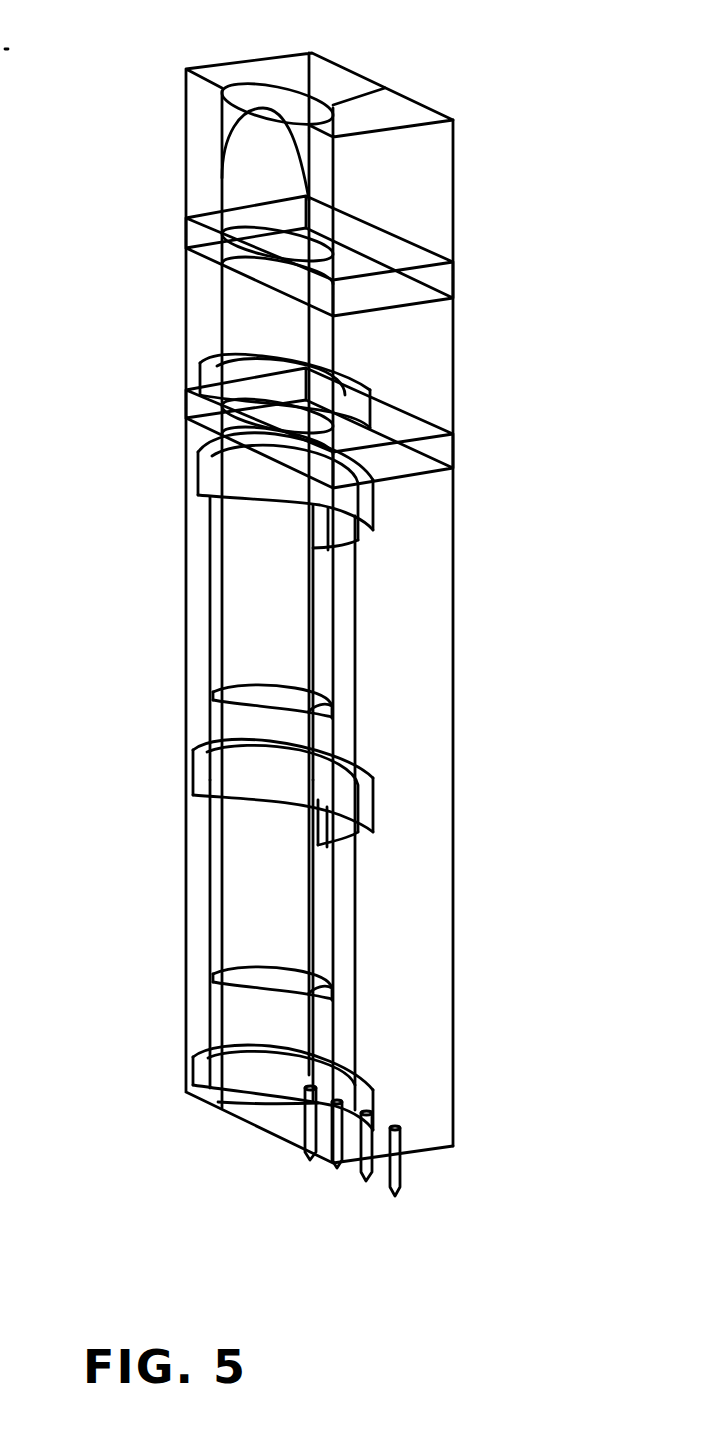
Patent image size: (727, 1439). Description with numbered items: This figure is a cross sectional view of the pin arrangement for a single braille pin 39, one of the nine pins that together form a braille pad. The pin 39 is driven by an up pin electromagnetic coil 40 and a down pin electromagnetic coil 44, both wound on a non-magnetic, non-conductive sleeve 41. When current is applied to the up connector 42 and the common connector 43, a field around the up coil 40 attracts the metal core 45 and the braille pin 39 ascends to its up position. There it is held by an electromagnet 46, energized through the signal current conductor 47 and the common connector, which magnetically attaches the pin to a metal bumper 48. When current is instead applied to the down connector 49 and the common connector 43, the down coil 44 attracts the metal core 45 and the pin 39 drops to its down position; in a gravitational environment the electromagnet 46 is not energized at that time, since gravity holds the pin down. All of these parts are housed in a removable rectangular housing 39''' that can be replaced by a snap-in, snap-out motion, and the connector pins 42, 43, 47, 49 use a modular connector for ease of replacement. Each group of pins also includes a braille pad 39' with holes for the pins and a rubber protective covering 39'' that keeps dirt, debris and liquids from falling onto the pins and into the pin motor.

The braille pin 39 is at (229, 583).
The braille pad 39' is at (152, 599).
The covering 39'' is at (413, 70).
The housing 39''' is at (510, 633).
The metal bumper 48 is at (184, 236).
The down connector pin 49 is at (184, 404).
The electromagnet 46 is at (372, 378).
The up pin electromagnetic coil 40 is at (358, 688).
The non-magnetic sleeve 41 is at (379, 815).
The down pin electromagnetic coil 44 is at (362, 957).
The metal core 45 is at (212, 988).
The common pin connector 43 is at (303, 1167).
The signal current conductor 47 is at (333, 1177).
The electric signal pin connector 42 is at (392, 1194).